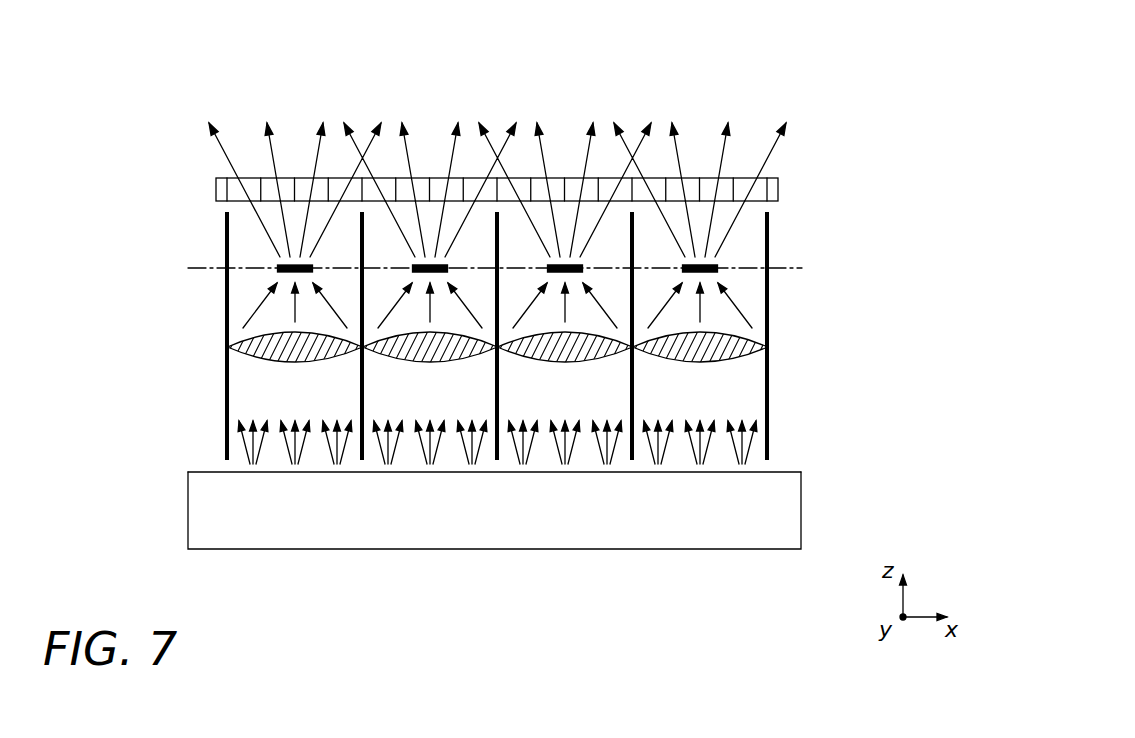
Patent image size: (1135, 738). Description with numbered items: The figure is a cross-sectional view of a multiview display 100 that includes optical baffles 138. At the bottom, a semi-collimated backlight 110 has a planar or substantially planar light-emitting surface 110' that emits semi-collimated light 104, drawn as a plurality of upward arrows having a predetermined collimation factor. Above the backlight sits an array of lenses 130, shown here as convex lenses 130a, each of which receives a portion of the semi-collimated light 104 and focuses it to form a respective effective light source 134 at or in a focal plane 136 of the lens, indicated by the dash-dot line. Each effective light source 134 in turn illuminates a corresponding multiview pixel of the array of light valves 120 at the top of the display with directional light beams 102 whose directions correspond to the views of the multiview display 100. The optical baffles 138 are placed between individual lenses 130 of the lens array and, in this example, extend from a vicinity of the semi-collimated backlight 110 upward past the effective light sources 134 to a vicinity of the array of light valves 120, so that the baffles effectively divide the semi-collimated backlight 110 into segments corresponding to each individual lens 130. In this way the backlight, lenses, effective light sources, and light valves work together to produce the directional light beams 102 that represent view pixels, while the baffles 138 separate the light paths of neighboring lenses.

The multiview display 100 is at (836, 52).
The directional light beams 102 is at (795, 145).
The light valves 120 is at (200, 185).
The effective light source 134 is at (270, 247).
The optical baffles 138 is at (780, 347).
The focal plane 136 is at (208, 272).
The lenses 130 is at (593, 293).
The convex lenses 130a is at (295, 268).
The semi-collimated light 104 is at (802, 427).
The light-emitting surface 110' is at (539, 446).
The semi-collimated backlight 110 is at (542, 511).